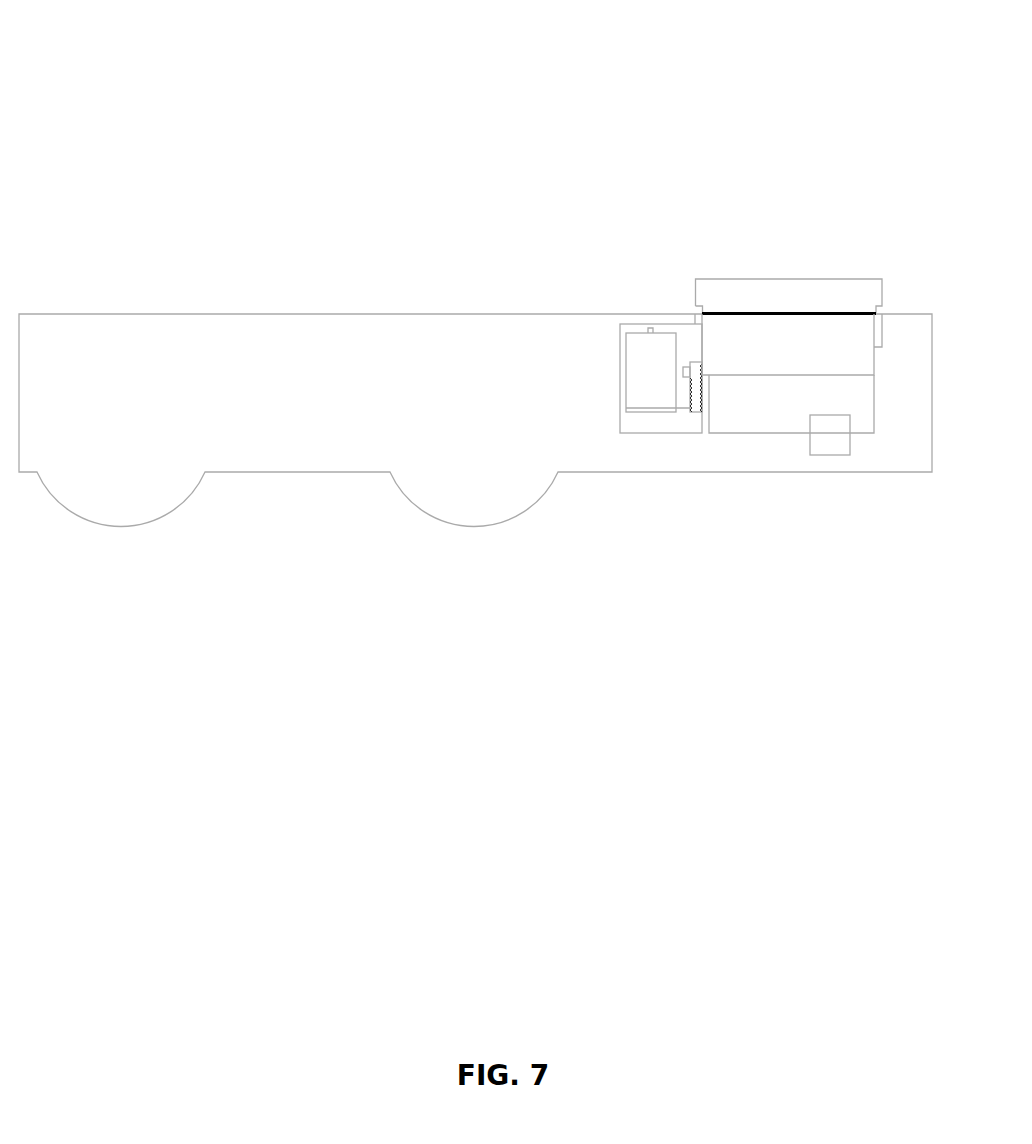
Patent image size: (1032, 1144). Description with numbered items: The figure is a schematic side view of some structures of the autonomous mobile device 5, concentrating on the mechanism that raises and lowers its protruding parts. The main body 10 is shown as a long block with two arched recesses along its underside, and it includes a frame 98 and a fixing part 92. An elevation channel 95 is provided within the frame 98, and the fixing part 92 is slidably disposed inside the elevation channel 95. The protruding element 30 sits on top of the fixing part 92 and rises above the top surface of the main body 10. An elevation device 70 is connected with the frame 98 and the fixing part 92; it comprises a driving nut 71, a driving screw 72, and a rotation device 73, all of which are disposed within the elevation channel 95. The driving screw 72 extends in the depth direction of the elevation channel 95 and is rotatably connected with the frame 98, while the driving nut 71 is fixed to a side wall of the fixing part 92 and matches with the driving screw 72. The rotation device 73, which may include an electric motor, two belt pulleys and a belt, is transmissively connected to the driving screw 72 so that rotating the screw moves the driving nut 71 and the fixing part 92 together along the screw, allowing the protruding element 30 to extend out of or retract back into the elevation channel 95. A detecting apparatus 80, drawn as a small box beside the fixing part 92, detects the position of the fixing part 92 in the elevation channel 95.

The electronic device 5 is at (475, 36).
The main body 10 is at (251, 325).
The protruding element 30 is at (792, 288).
The elevation device 70 is at (689, 447).
The driving nut 71 is at (682, 370).
The driving screw 72 is at (696, 396).
The rotation device 73 is at (658, 346).
The detecting apparatus 80 is at (830, 448).
The fixing part 92 is at (750, 358).
The elevation channel 95 is at (778, 420).
The frame 98 is at (889, 370).